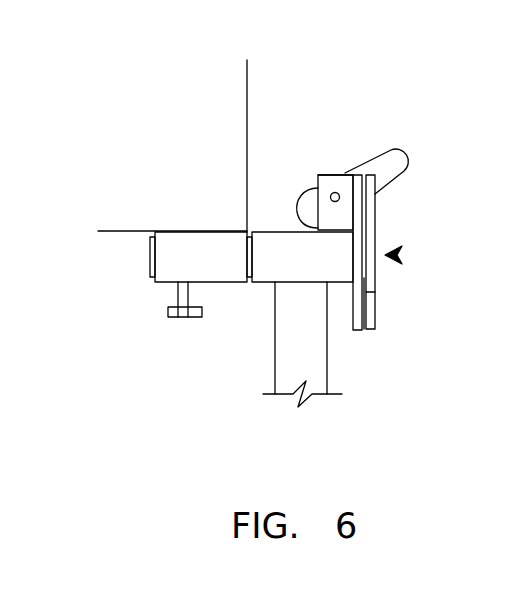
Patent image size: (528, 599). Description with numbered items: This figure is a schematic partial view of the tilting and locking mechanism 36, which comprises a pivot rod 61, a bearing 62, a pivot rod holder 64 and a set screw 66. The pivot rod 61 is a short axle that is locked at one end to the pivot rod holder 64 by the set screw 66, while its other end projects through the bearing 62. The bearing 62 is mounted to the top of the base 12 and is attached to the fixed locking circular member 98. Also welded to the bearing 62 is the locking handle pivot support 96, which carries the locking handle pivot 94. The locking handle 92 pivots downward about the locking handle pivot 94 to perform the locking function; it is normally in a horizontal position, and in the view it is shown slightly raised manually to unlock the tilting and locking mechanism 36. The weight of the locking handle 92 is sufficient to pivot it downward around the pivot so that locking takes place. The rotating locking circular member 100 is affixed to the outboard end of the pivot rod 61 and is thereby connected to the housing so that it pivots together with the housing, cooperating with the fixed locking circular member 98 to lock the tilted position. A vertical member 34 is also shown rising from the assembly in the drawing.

The base 12 is at (329, 374).
The vertical member 34 is at (248, 69).
The tilting and locking mechanism 36 is at (400, 255).
The pivot rod 61 is at (150, 270).
The bearing 62 is at (281, 231).
The pivot rod holder 64 is at (207, 285).
The set screw 66 is at (175, 317).
The locking handle 92 is at (408, 159).
The locking handle pivot 94 is at (333, 192).
The locking handle pivot support 96 is at (336, 174).
The fixed locking circular member 98 is at (356, 330).
The rotating locking circular member 100 is at (375, 319).